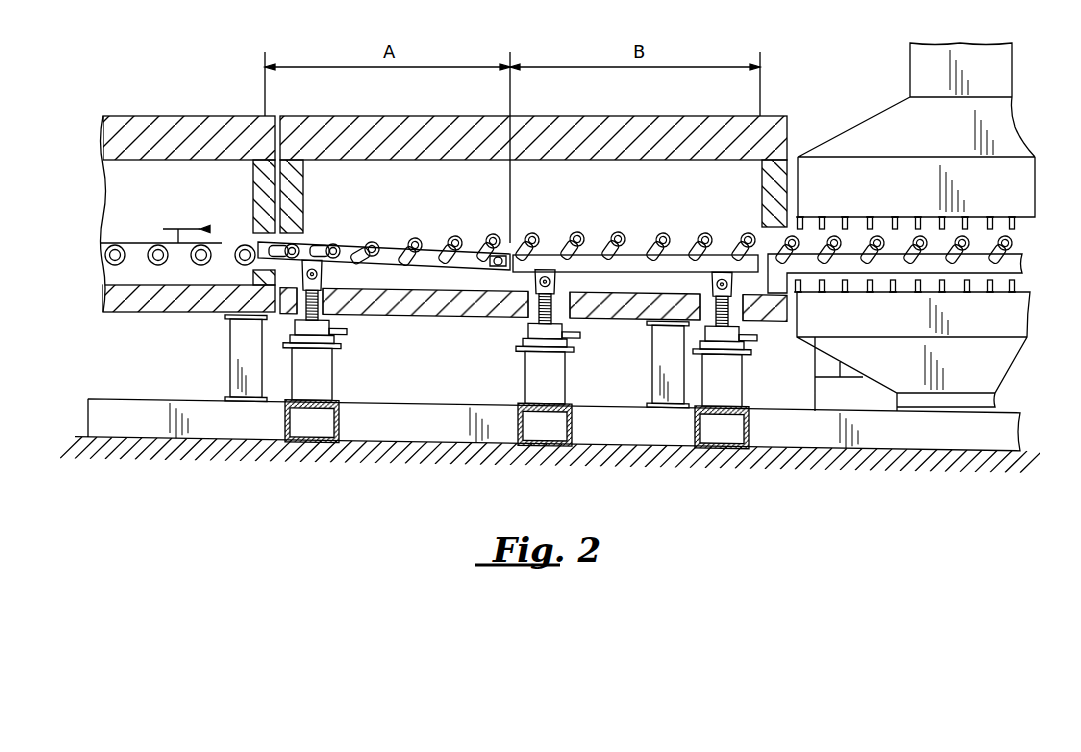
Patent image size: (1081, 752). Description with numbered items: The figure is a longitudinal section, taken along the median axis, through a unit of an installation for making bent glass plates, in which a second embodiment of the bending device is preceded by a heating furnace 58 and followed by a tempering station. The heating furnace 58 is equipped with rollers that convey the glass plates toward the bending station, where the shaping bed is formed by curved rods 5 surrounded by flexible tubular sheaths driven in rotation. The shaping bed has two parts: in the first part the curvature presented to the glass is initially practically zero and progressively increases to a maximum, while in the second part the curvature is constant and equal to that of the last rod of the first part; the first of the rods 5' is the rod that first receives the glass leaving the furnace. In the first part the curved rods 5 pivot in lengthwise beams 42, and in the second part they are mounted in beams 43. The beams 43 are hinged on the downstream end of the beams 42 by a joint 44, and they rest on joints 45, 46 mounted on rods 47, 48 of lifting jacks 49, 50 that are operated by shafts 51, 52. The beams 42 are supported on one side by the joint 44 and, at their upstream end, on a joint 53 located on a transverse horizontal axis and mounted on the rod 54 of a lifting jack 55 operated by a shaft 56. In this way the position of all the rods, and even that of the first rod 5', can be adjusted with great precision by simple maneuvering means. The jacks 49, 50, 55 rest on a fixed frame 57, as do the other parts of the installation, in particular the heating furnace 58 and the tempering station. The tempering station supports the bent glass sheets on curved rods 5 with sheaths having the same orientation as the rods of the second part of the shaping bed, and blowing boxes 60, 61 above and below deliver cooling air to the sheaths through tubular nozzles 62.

The heating furnace 58 is at (153, 122).
The first curved rod of the shaping bed 5' is at (303, 224).
The beams of first part A 42 is at (385, 248).
The curved rods 5 is at (662, 230).
The joint 44 is at (497, 258).
The beams of second part B 43 is at (600, 255).
The blowing box 61 is at (880, 120).
The tubular nozzles 62 is at (918, 228).
The joint 53 is at (339, 276).
The rod of lifting jack 54 is at (259, 322).
The lifting jack 55 is at (267, 352).
The shaft 56 is at (350, 357).
The fixed frame 57 is at (437, 402).
The rod of lifting jack 47 is at (515, 321).
The joint 45 is at (589, 343).
The lifting jack 49 is at (524, 355).
The shaft 51 is at (560, 370).
The rod of lifting jack 48 is at (676, 326).
The lifting jack 50 is at (688, 366).
The shaft 52 is at (765, 362).
The joint 46 is at (773, 296).
The blowing box 60 is at (1000, 355).